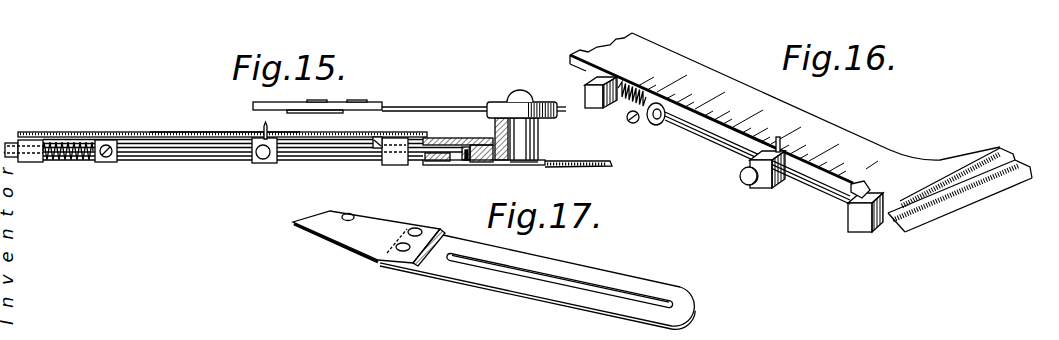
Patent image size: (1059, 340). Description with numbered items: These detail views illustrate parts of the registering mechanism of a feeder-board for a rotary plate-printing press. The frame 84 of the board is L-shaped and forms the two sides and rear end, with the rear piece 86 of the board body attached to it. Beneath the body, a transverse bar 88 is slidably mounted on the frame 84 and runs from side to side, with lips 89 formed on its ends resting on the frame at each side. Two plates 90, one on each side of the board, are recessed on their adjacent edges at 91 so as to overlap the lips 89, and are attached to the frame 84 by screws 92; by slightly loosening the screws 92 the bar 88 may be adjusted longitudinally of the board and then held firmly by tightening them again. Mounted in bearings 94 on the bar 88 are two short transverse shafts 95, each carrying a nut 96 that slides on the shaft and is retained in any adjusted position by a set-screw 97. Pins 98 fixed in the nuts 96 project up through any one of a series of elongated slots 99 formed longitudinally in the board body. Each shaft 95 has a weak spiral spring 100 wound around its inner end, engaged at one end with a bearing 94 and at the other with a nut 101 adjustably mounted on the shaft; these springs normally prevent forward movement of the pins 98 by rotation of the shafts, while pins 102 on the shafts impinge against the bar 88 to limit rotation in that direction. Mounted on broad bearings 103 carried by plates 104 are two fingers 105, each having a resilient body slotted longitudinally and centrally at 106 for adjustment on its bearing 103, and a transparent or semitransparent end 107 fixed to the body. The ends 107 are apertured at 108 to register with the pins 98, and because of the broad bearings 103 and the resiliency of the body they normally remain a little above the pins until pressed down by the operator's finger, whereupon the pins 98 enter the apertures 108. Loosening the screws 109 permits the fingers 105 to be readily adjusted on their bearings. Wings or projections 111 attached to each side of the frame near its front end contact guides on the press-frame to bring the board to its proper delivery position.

In FIG. 15, the frame of the board 84 is at (494, 125).
In FIG. 15, the rear piece 86 is at (55, 133).
In FIG. 15, the transverse bar 88 is at (163, 142).
In FIG. 16, the transverse bar 88 is at (661, 56).
In FIG. 15, the lips 89 is at (427, 161).
In FIG. 16, the lips 89 is at (934, 208).
In FIG. 15, the plates 90 is at (489, 168).
In FIG. 15, the recess 91 is at (447, 168).
In FIG. 15, the screws 92 is at (466, 160).
In FIG. 15, the bearings 94 is at (32, 162).
In FIG. 16, the bearings 94 is at (585, 90).
In FIG. 15, the short transverse shafts 95 is at (207, 156).
In FIG. 16, the short transverse shafts 95 is at (809, 186).
In FIG. 15, the nut 96 is at (278, 163).
In FIG. 16, the nut 96 is at (768, 190).
In FIG. 15, the set-screws 97 is at (261, 160).
In FIG. 16, the set-screws 97 is at (742, 184).
In FIG. 15, the pins 98 is at (268, 126).
In FIG. 16, the pins 98 is at (748, 158).
In FIG. 15, the elongated slots 99 is at (220, 133).
In FIG. 15, the spiral spring 100 is at (77, 161).
In FIG. 16, the spiral spring 100 is at (624, 104).
In FIG. 15, the nut 101 is at (112, 163).
In FIG. 16, the nut 101 is at (651, 124).
In FIG. 15, the pins 102 is at (373, 141).
In FIG. 16, the pins 102 is at (868, 189).
In FIG. 15, the bearings 103 is at (539, 146).
In FIG. 15, the plates 104 is at (517, 161).
In FIG. 15, the fingers 105 is at (423, 110).
In FIG. 17, the fingers 105 is at (568, 265).
In FIG. 17, the slot 106 is at (611, 290).
In FIG. 15, the transparent end 107 is at (269, 103).
In FIG. 17, the transparent end 107 is at (357, 248).
In FIG. 17, the apertures 108 is at (357, 207).
In FIG. 15, the screws 109 is at (519, 93).
In FIG. 15, the wings or projections 111 is at (578, 162).